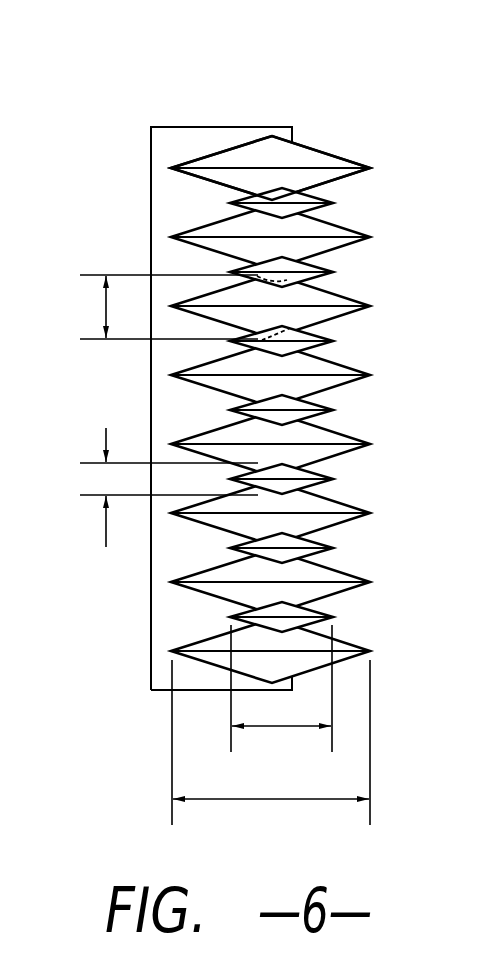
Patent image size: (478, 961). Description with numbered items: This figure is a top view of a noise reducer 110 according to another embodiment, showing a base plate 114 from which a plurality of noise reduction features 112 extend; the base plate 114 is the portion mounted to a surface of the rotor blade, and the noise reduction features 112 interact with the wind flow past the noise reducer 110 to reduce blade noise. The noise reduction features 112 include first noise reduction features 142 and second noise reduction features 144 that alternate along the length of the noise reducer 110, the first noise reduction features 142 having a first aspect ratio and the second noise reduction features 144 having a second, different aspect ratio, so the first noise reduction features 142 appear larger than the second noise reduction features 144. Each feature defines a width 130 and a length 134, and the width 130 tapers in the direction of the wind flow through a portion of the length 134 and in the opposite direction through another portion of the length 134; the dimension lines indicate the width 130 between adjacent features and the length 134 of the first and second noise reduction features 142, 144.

The noise reducer 110 is at (257, 434).
The noise reduction features 112 is at (324, 382).
The base plate 114 is at (188, 140).
The width 130 is at (105, 307).
The length 134 is at (278, 730).
The first noise reduction feature 142 is at (310, 157).
The second noise reduction feature 144 is at (305, 199).